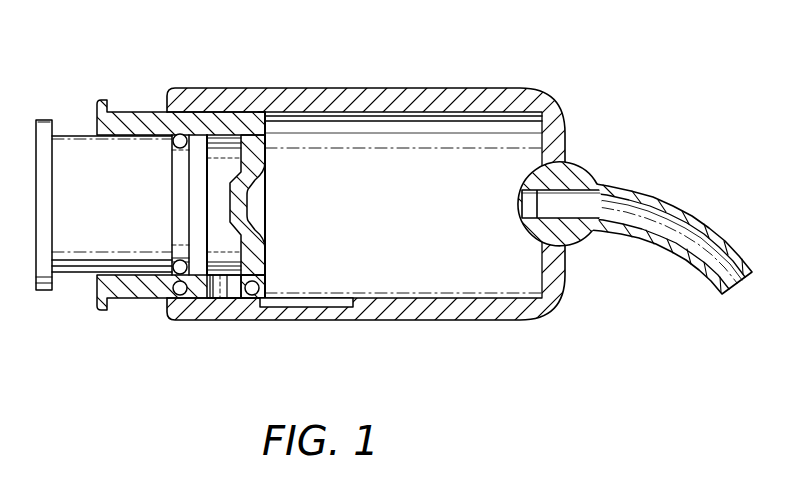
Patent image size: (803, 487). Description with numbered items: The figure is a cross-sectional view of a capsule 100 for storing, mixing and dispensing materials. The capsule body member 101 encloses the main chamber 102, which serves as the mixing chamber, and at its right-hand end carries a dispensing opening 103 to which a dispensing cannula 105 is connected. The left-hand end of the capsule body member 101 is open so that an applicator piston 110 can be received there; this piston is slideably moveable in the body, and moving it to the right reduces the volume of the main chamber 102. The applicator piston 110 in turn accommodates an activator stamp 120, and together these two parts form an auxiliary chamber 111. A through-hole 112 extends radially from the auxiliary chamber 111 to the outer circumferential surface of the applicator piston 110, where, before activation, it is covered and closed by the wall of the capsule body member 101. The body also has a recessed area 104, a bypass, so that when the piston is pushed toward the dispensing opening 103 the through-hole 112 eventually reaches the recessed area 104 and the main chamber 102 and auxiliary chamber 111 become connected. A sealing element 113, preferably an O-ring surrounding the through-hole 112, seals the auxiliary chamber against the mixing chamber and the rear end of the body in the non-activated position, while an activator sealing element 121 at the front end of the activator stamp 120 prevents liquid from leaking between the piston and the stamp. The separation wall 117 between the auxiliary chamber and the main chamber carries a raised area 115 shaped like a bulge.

The capsule 100 is at (571, 64).
The capsule body member 101 is at (491, 322).
The main chamber 102 is at (403, 170).
The dispensing opening 103 is at (520, 200).
The recessed area 104 is at (308, 302).
The dispensing cannula 105 is at (668, 212).
The applicator piston 110 is at (126, 111).
The auxiliary chamber 111 is at (222, 168).
The through-hole 112 is at (229, 277).
The sealing element 113 is at (179, 296).
The raised area 115 is at (258, 193).
The separation wall 117 is at (263, 112).
The activator stamp 120 is at (75, 240).
The activator sealing element 121 is at (183, 134).